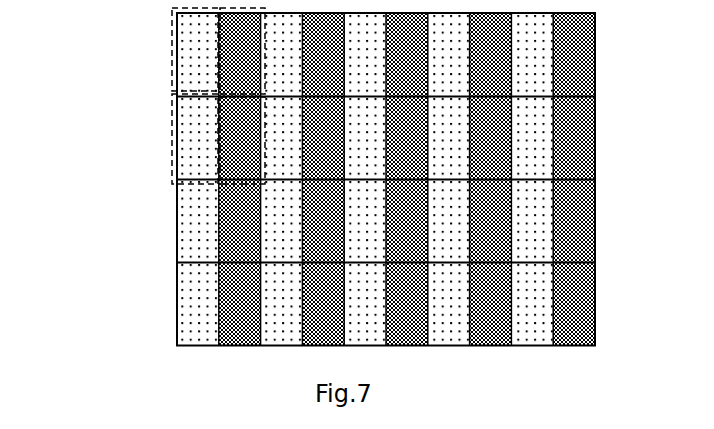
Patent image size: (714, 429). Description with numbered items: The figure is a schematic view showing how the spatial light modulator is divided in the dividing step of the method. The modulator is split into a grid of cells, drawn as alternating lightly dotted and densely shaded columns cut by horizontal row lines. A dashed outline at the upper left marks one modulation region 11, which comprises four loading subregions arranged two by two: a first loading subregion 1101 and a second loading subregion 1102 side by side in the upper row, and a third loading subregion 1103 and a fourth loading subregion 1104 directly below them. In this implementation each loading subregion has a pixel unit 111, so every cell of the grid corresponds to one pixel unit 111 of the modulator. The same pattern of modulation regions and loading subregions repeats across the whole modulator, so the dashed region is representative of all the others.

The pixel unit 111 is at (595, 43).
The modulation region 11 is at (150, 96).
The first loading subregion 1101 is at (172, 23).
The second loading subregion 1102 is at (215, 53).
The third loading subregion 1103 is at (172, 113).
The fourth loading subregion 1104 is at (215, 142).